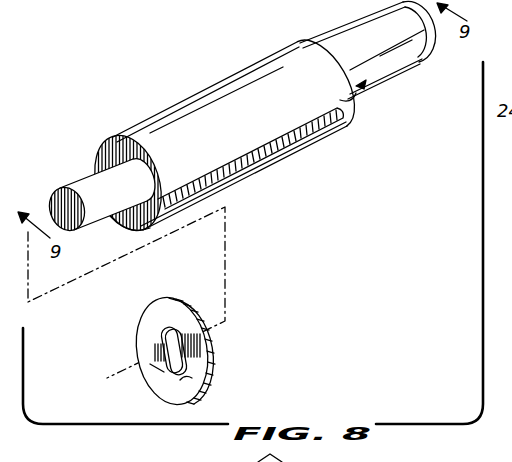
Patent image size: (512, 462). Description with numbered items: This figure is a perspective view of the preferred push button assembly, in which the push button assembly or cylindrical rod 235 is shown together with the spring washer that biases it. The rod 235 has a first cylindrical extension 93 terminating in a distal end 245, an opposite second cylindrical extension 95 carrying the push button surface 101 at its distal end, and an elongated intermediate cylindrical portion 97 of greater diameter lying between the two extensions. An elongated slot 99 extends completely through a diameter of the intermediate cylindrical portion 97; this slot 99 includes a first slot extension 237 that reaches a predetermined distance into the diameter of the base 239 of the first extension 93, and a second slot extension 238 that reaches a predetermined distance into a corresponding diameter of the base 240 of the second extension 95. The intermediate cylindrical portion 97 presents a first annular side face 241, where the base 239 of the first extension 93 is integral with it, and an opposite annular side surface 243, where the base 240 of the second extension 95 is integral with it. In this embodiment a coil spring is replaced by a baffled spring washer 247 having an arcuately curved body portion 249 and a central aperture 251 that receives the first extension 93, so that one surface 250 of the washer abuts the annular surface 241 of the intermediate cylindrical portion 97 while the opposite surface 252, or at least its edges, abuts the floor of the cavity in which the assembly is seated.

The push button assembly or cylindrical rod 235 is at (250, 142).
The elongated intermediate cylindrical portion 97 is at (270, 62).
The second cylindrical extension 95 is at (355, 35).
The push button surface 101 is at (433, 33).
The base of the second extension 240 is at (399, 50).
The opposite annular side surface 243 is at (366, 77).
The second slot extension 238 is at (356, 93).
The elongated slot 99 is at (286, 147).
The base of the first extension 239 is at (143, 160).
The first annular side face 241 is at (105, 150).
The distal end of the first extension 245 is at (58, 207).
The first cylindrical extension 93 is at (93, 225).
The first slot extension 237 is at (140, 232).
The baffled spring washer 247 is at (185, 336).
The surface of the spring washer 250 is at (187, 304).
The arcuately curved body portion 249 is at (156, 321).
The central aperture 251 is at (162, 372).
The opposite surface of the spring washer 252 is at (195, 382).